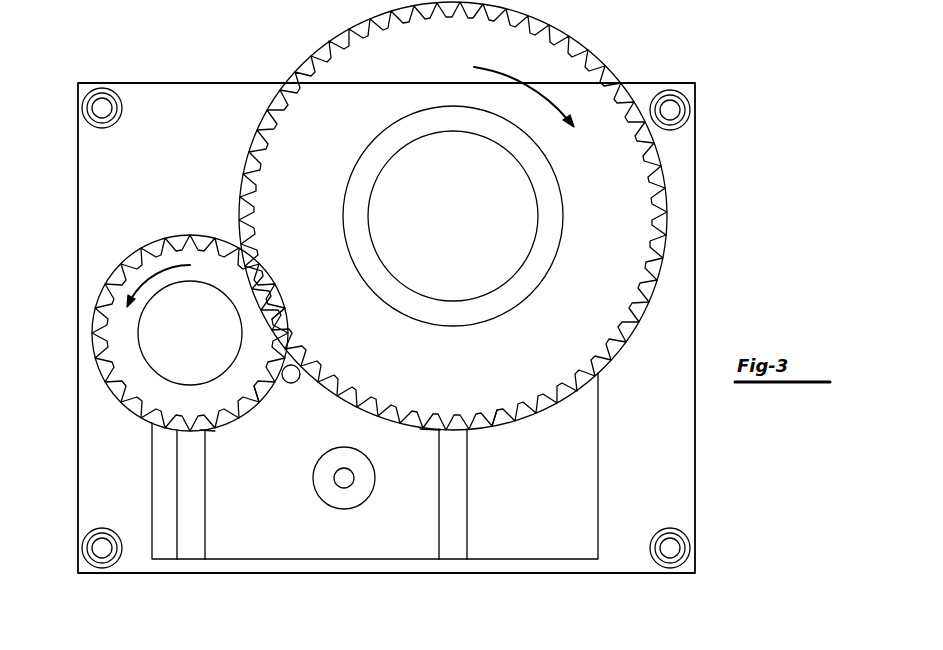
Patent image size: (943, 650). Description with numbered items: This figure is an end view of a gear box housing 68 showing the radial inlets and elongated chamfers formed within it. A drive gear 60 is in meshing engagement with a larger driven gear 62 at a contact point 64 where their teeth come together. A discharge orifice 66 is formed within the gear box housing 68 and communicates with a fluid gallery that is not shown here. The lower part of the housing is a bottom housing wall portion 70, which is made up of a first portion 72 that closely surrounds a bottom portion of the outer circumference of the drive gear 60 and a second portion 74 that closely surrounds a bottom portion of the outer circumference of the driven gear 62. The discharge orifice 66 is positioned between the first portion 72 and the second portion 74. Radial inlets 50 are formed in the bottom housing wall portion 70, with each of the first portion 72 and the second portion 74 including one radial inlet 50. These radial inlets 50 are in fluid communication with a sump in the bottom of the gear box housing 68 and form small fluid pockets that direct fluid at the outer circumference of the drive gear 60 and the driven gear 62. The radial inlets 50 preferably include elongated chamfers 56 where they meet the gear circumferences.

The radial inlets 50 is at (205, 513).
The elongated chamfers 56 is at (210, 433).
The drive gear 60 is at (145, 392).
The driven gear 62 is at (462, 381).
The contact point 64 is at (277, 302).
The discharge orifice 66 is at (293, 383).
The gear box housing 68 is at (598, 420).
The bottom housing wall portion 70 is at (583, 522).
The first portion 72 is at (260, 400).
The second portion 74 is at (498, 427).